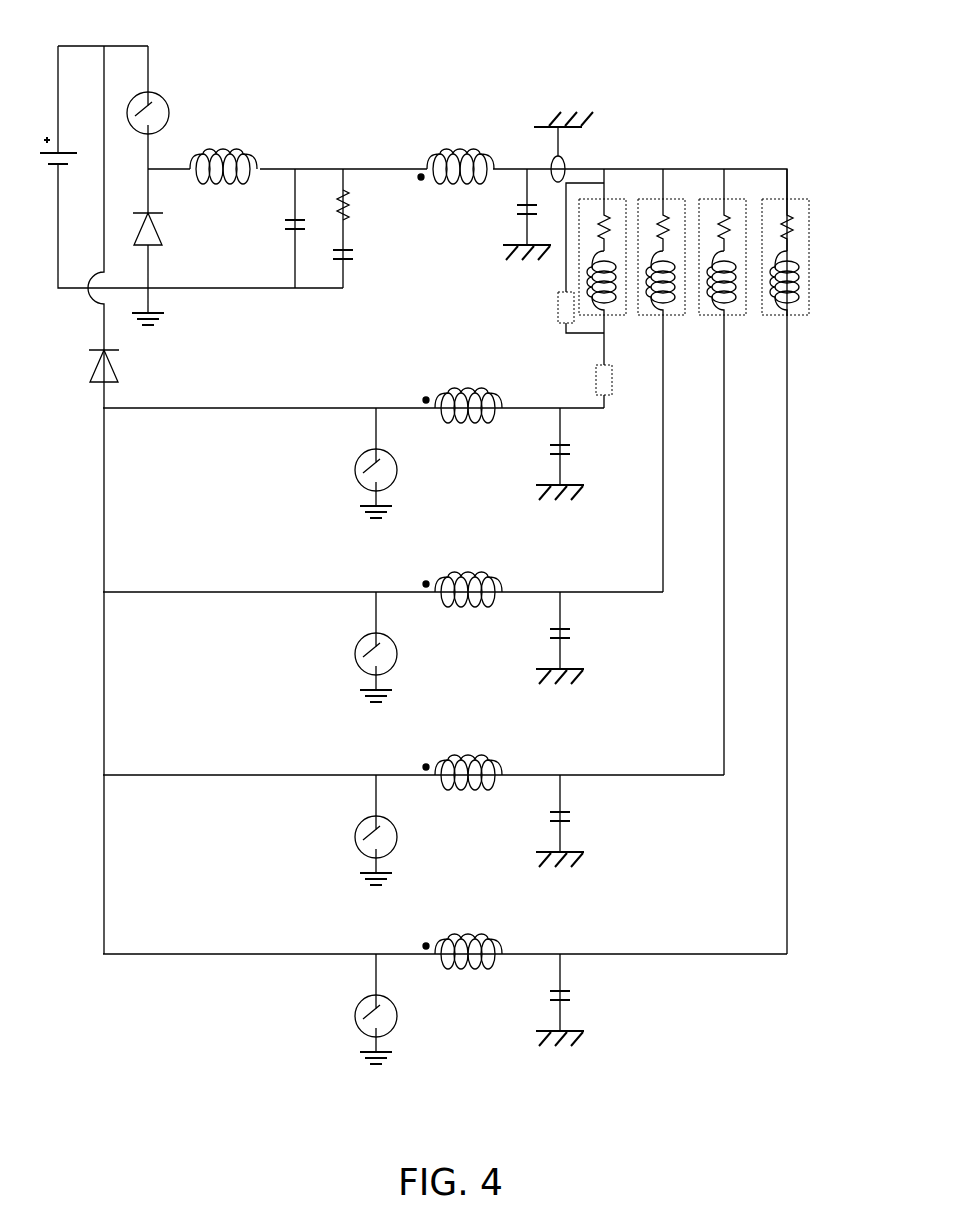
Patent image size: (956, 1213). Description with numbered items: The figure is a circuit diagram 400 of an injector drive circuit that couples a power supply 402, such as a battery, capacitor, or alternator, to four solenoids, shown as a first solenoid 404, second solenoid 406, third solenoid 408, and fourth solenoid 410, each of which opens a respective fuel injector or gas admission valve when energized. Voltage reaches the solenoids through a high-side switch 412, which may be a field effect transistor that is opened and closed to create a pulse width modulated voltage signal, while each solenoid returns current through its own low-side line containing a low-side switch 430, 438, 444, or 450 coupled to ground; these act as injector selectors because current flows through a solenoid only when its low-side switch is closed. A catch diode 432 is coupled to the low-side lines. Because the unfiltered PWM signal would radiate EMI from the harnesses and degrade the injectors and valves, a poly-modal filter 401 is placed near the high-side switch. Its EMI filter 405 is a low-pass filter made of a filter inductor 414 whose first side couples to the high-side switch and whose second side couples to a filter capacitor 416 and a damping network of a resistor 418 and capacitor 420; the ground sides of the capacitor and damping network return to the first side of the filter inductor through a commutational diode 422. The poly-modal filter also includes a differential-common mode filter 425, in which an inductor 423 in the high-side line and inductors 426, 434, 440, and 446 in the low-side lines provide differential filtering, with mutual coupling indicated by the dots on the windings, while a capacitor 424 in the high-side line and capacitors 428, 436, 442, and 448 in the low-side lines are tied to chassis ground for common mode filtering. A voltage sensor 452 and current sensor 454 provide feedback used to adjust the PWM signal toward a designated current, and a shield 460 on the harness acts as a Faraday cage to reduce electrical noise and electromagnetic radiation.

The circuit diagram 400 is at (741, 40).
The poly-modal filter 401 is at (376, 40).
The power supply 402 is at (58, 132).
The first solenoid 404 is at (604, 204).
The EMI filter 405 is at (285, 118).
The second solenoid 406 is at (663, 204).
The third solenoid 408 is at (724, 204).
The fourth solenoid 410 is at (787, 204).
The switch 412 is at (163, 96).
The filter inductor 414 is at (228, 154).
The filter capacitor 416 is at (293, 219).
The resistor 418 is at (349, 204).
The capacitor 420 is at (349, 250).
The commutational diode 422 is at (163, 233).
The inductor 423 is at (474, 154).
The capacitor 424 is at (523, 215).
The differential-common mode filter 425 is at (477, 98).
The inductor 426 is at (470, 394).
The capacitor 428 is at (564, 446).
The low-side switch 430 is at (392, 452).
The catch diode 432 is at (118, 369).
The inductor 434 is at (470, 578).
The capacitor 436 is at (564, 628).
The low-side switch 438 is at (392, 636).
The inductor 440 is at (470, 762).
The capacitor 442 is at (565, 812).
The low-side switch 444 is at (392, 818).
The inductor 446 is at (470, 941).
The capacitor 448 is at (565, 990).
The low-side switch 450 is at (392, 998).
The voltage sensor 452 is at (557, 312).
The current sensor 454 is at (594, 381).
The shield 460 is at (563, 157).